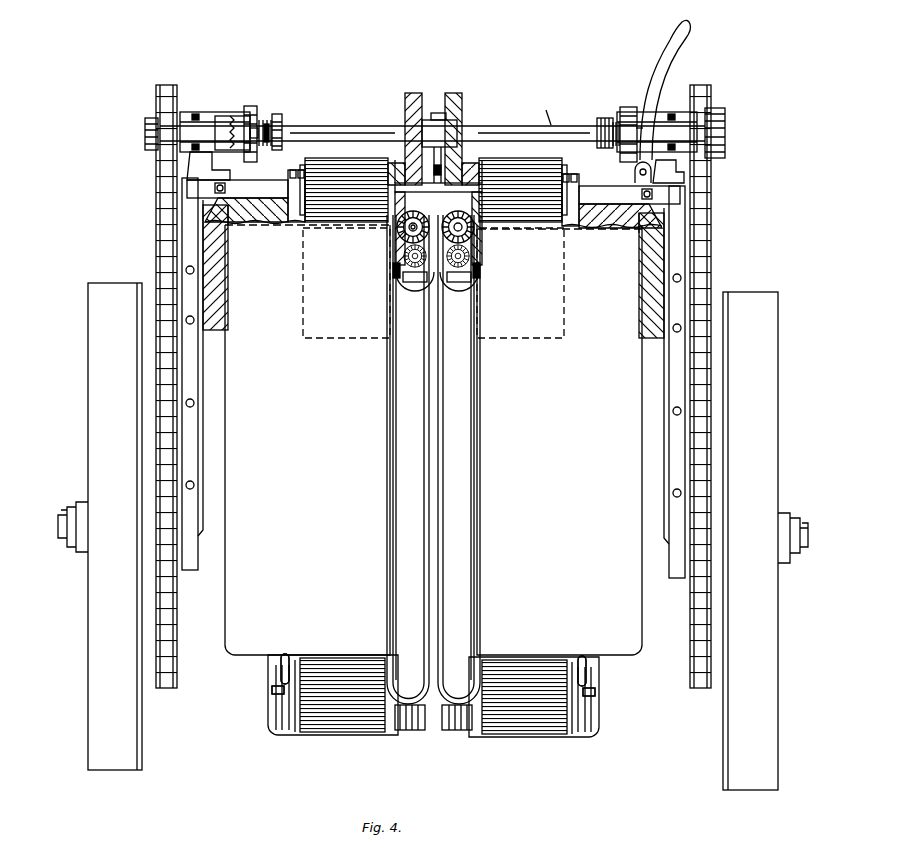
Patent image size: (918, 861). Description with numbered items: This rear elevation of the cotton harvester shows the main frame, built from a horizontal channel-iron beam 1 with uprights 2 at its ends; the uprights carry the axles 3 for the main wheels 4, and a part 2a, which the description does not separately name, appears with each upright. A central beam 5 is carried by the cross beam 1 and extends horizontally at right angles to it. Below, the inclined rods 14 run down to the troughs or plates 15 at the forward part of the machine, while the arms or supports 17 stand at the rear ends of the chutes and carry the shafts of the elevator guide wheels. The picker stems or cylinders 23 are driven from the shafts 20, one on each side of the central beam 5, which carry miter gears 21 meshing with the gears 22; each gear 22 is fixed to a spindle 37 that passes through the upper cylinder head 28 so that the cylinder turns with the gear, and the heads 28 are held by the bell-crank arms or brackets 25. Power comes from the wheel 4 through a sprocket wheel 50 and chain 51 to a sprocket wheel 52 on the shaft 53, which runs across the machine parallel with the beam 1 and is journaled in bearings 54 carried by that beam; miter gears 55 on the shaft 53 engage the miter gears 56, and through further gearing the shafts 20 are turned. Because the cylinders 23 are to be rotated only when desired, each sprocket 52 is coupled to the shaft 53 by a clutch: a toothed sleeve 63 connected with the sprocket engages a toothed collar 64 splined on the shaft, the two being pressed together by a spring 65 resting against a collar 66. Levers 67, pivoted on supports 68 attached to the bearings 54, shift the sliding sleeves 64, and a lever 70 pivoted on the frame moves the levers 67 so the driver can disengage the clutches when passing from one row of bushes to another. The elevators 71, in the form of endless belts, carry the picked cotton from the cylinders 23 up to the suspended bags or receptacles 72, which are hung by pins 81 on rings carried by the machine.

The horizontal beam 1 is at (433, 204).
The uprights 2 is at (433, 390).
The side plate 2a is at (222, 292).
The axles 3 is at (429, 532).
The main wheels 4 is at (433, 536).
The beam 5 is at (438, 212).
The rods 14 is at (600, 668).
The troughs or plates 15 is at (272, 690).
The arms or supports 17 is at (439, 198).
The shafts 20 is at (432, 224).
The miter gears 21 is at (430, 223).
The gears 22 is at (436, 253).
The picker cylinders 23 is at (433, 472).
The arms or brackets 25 is at (652, 303).
The cylinder heads 28 is at (437, 494).
The spindle or shaft 37 is at (392, 272).
The sprocket wheel 50 is at (700, 612).
The chain 51 is at (714, 386).
The sprocket wheel 52 is at (448, 126).
The shaft 53 is at (286, 114).
The bearings 54 is at (438, 138).
The miter gears 55 is at (445, 139).
The miter gears 56 is at (433, 182).
The toothed sleeves 63 is at (232, 120).
The toothed collars or sleeves 64 is at (250, 106).
The springs 65 is at (267, 120).
The collars 66 is at (283, 124).
The levers 67 is at (267, 142).
The supports 68 is at (250, 138).
The lever 70 is at (654, 42).
The elevators 71 is at (433, 695).
The bags or receptacles 72 is at (433, 440).
The pins 81 is at (612, 240).